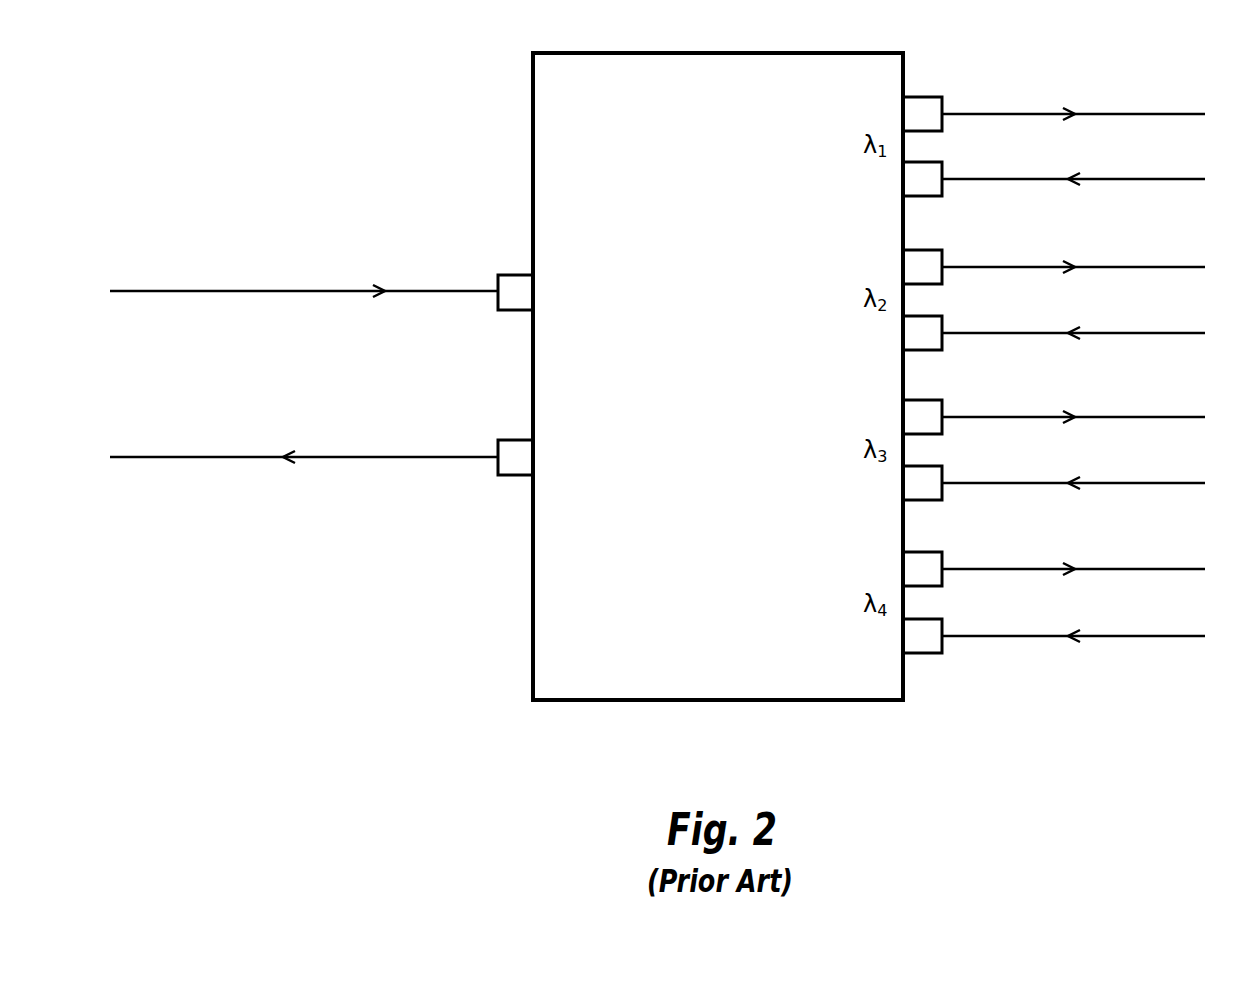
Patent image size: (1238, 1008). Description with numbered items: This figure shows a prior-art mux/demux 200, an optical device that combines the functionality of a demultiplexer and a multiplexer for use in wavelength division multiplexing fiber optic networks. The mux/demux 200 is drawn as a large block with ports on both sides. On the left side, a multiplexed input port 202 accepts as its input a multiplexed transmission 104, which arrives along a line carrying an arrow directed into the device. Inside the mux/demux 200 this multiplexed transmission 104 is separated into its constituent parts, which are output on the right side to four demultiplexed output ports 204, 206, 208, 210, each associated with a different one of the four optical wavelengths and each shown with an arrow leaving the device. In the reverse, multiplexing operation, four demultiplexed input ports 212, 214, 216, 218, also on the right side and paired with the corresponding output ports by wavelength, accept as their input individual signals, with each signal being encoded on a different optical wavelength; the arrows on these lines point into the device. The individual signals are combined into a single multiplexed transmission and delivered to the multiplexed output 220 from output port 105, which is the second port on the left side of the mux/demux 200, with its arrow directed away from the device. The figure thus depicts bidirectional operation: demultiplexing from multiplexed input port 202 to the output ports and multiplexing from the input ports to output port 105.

The multiplexed transmission 104 is at (250, 290).
The output port 105 is at (514, 440).
The mux/demux 200 is at (528, 722).
The multiplexed input port 202 is at (517, 275).
The demultiplexed output port 204 is at (942, 97).
The demultiplexed output port 206 is at (942, 250).
The demultiplexed output port 208 is at (942, 400).
The demultiplexed output port 210 is at (942, 552).
The demultiplexed input port 212 is at (942, 162).
The demultiplexed input port 214 is at (942, 316).
The demultiplexed input port 216 is at (942, 466).
The demultiplexed input port 218 is at (942, 619).
The multiplexed output 220 is at (250, 455).